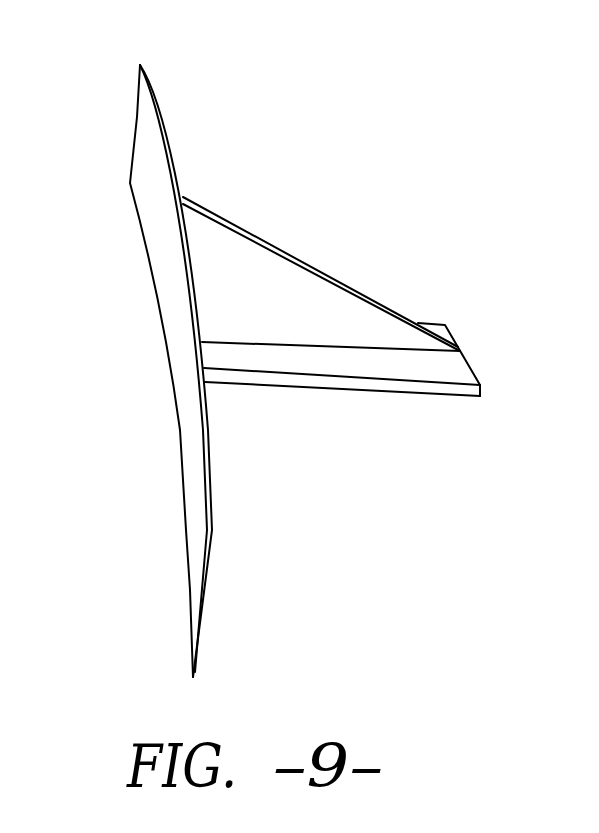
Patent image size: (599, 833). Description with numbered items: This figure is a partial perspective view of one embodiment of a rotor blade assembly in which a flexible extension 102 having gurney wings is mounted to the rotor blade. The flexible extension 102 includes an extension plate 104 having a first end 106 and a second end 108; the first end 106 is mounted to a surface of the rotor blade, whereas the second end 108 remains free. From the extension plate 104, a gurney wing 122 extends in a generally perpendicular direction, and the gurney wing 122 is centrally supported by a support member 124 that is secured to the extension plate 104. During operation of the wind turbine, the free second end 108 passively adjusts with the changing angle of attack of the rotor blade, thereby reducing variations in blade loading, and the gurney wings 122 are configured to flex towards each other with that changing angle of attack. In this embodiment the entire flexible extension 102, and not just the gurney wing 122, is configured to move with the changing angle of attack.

The flexible extension 102 is at (283, 220).
The extension plate 104 is at (440, 355).
The first end 106 is at (460, 355).
The second end 108 is at (195, 452).
The gurney wing 122 is at (147, 127).
The support member 124 is at (313, 298).